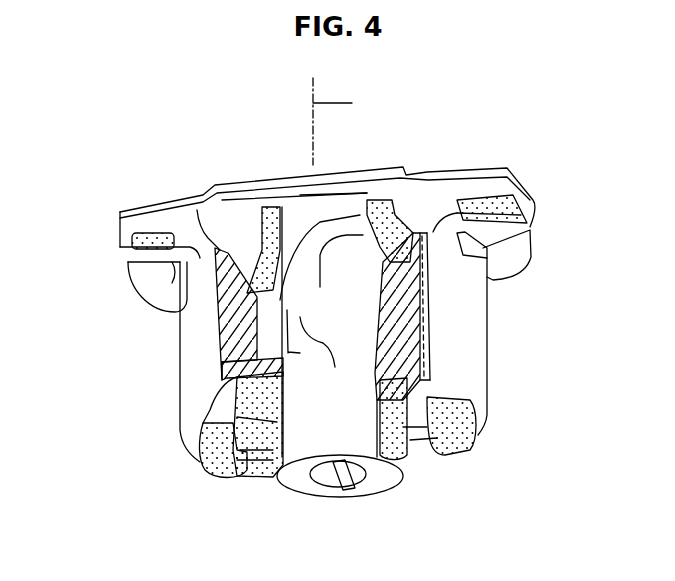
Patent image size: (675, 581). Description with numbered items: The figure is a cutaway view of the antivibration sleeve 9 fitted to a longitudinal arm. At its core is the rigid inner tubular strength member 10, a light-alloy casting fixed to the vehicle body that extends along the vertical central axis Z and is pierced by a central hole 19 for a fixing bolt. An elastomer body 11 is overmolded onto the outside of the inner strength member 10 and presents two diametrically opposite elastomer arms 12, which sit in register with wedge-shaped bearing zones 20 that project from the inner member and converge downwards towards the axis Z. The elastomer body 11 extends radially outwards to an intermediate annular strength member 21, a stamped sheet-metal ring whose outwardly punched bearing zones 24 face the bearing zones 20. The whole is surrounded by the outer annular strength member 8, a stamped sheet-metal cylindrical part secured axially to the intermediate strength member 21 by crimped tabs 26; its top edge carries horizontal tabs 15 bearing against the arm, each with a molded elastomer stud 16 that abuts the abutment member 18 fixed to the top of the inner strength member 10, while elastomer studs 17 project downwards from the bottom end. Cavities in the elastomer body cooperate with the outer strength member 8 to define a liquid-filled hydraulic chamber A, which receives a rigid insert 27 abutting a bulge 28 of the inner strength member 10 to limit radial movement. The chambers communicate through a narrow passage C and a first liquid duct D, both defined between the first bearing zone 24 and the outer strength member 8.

The vertical central axis Z is at (345, 121).
The abutment member 18 is at (388, 173).
The antivibration sleeve 9 is at (548, 185).
The tabs 26 is at (210, 233).
The elastomer body 11 is at (264, 240).
The elastomer stud 16 is at (133, 250).
The horizontal tabs 15 is at (140, 285).
The insert 27 is at (215, 331).
The hydraulic chamber A is at (220, 363).
The intermediate annular strength member 21 is at (227, 385).
The outer annular strength member 8 is at (482, 358).
The bearing zones 24 is at (433, 318).
The first liquid duct D is at (430, 293).
The narrow passage C is at (433, 338).
The wedge-shaped bearing zones 20 is at (425, 335).
The bulge 28 is at (272, 475).
The elastomer studs 17 is at (218, 478).
The elastomer arms 12 is at (403, 405).
The inner tubular strength member 10 is at (378, 482).
The central hole 19 is at (327, 482).